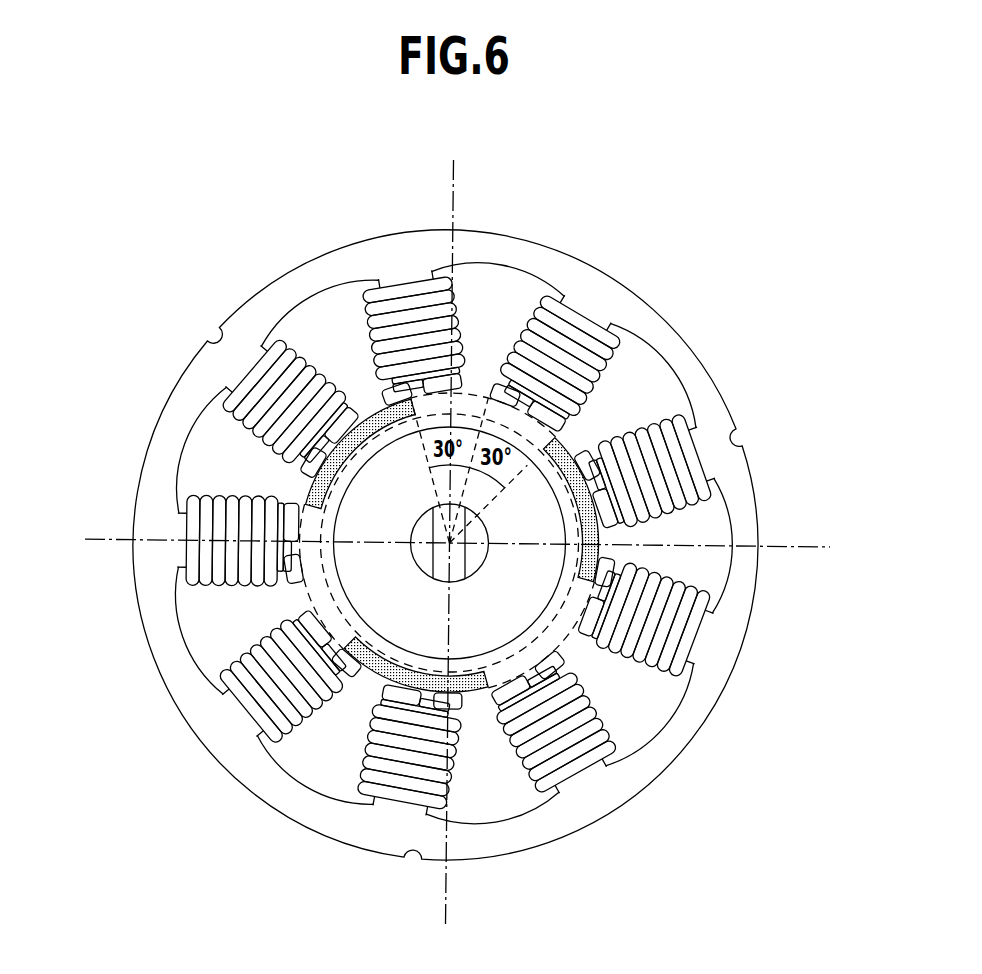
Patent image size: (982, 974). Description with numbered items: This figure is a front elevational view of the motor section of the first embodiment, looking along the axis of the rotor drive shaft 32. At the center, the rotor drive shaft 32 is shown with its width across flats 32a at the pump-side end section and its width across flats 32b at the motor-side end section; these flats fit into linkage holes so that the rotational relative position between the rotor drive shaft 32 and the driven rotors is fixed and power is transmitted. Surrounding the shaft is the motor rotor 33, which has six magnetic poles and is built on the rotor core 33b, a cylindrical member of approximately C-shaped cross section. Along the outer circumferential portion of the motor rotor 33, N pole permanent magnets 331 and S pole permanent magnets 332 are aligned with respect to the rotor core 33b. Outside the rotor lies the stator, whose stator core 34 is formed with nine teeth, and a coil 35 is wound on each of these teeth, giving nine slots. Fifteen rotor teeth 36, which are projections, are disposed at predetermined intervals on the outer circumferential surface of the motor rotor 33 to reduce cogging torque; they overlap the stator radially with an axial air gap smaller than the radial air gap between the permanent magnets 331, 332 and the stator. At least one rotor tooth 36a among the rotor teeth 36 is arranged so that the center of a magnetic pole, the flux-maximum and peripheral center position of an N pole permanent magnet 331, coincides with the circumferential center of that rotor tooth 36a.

The rotor drive shaft 32 is at (488, 540).
The width across flats 32a is at (415, 560).
The width across flats 32b is at (490, 552).
The motor rotor 33 is at (480, 704).
The rotor core 33b is at (523, 608).
The N pole permanent magnet 331 is at (516, 385).
The S pole permanent magnet 332 is at (583, 500).
The stator core 34 is at (623, 300).
The coil 35 is at (283, 400).
The rotor teeth 36 is at (283, 527).
The rotor tooth 36a is at (476, 394).